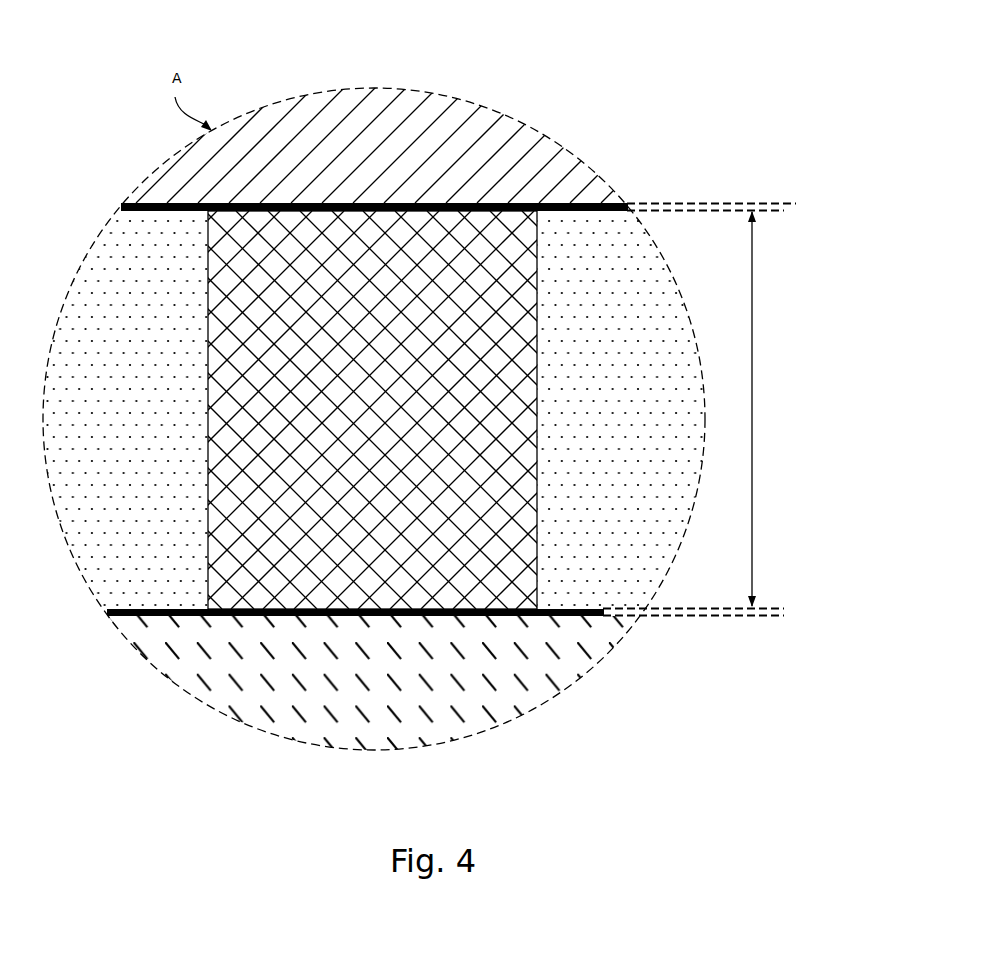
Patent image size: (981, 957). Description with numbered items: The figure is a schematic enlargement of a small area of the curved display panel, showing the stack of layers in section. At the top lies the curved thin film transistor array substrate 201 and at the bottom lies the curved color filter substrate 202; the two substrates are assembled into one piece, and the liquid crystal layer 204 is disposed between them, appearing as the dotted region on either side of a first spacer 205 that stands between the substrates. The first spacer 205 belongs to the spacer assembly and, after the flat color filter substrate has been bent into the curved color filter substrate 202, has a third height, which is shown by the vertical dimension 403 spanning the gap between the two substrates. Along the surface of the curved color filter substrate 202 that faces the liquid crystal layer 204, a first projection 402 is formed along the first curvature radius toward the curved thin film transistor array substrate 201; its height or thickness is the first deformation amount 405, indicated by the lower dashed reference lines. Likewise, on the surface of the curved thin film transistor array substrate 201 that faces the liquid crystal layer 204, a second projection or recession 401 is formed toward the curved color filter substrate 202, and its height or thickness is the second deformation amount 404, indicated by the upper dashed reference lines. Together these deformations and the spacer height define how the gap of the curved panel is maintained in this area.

The curved thin film transistor array substrate 201 is at (548, 144).
The curved color filter substrate 202 is at (414, 727).
The liquid crystal layer 204 is at (660, 522).
The first spacer 205 is at (537, 355).
The second projection or recession 401 is at (377, 200).
The first projection 402 is at (365, 618).
The thickness dimension 403 is at (753, 398).
The second deformation amount 404 is at (785, 206).
The first deformation amount 405 is at (785, 611).